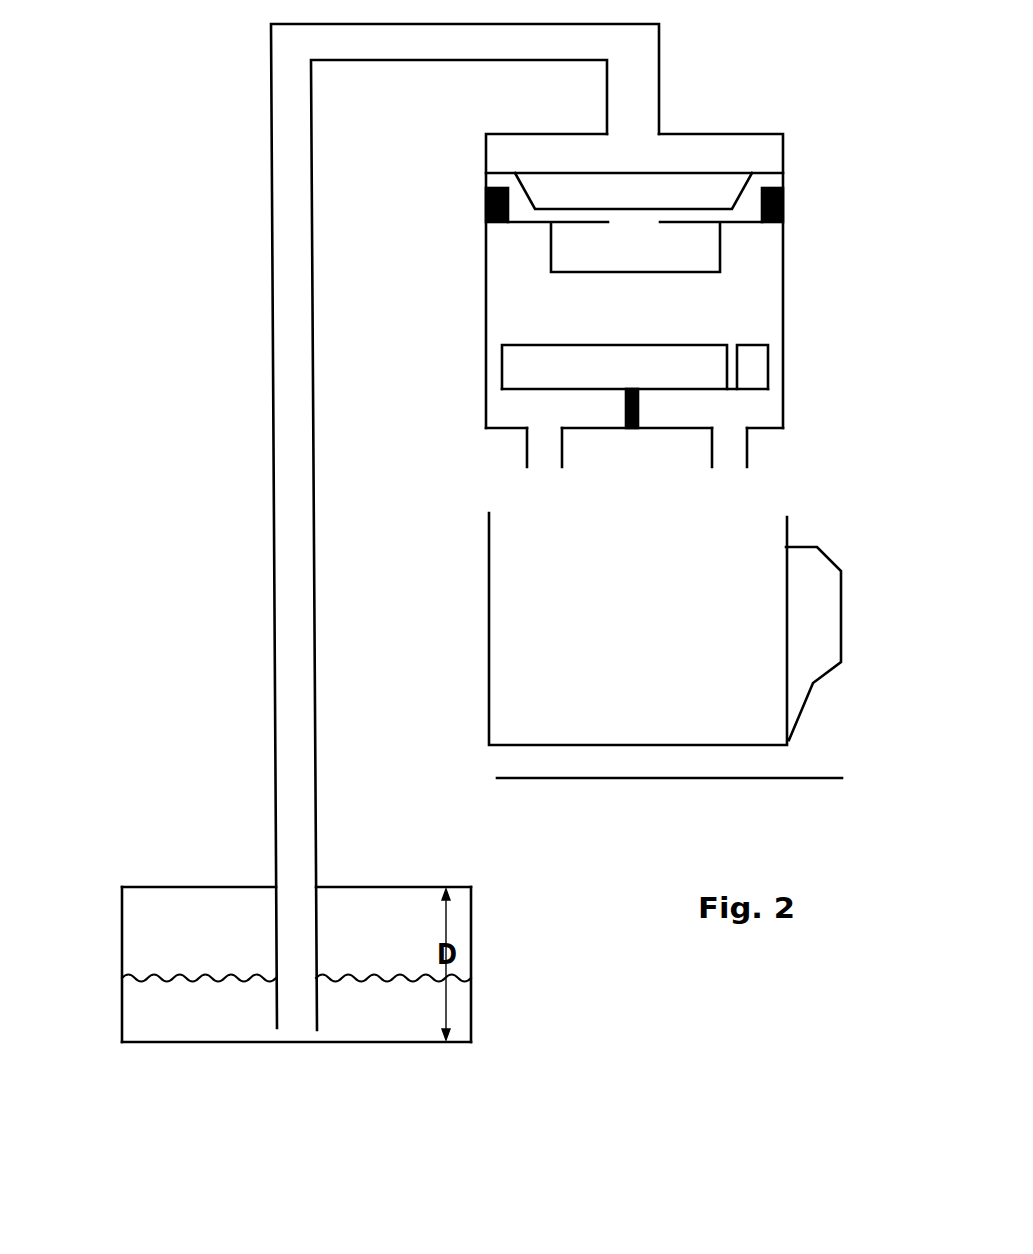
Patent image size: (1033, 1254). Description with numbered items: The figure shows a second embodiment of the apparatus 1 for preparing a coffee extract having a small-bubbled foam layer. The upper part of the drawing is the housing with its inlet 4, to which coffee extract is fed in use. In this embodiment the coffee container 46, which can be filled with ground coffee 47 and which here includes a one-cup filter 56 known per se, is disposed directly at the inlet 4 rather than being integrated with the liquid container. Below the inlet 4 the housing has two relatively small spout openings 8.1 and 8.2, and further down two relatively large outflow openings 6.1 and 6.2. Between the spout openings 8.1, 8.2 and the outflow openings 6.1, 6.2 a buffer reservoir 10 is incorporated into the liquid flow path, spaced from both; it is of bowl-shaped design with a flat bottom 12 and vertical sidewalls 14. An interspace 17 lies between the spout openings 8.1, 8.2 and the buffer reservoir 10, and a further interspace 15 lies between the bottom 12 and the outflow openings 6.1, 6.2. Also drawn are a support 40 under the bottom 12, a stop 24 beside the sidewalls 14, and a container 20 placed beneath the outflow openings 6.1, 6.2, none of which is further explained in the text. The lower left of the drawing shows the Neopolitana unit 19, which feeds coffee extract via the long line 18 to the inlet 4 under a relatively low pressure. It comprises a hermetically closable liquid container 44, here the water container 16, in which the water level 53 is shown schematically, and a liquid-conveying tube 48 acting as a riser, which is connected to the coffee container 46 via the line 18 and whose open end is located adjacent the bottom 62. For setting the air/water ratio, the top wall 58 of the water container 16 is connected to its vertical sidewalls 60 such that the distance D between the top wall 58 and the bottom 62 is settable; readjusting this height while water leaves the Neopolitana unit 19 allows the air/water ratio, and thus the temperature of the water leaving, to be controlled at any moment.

The apparatus 1 is at (404, 365).
The inlet 4 is at (568, 243).
The outflow opening 6.1 is at (538, 450).
The outflow opening 6.2 is at (735, 446).
The spout opening 8.1 is at (587, 273).
The spout opening 8.2 is at (683, 273).
The buffer reservoir 10 is at (513, 380).
The flat bottom 12 is at (563, 390).
The vertical sidewalls 14 is at (502, 373).
The interspace 15 is at (562, 424).
The water container 16 is at (471, 922).
The interspace 17 is at (646, 323).
The line 18 is at (314, 595).
The Neopolitana unit 19 is at (523, 1021).
The container 20 is at (841, 620).
The stop 24 is at (730, 352).
The support 40 is at (638, 415).
The liquid container 44 is at (122, 967).
The coffee container 46 is at (762, 155).
The ground coffee 47 is at (672, 197).
The liquid-conveying tube 48 is at (318, 967).
The water level 53 is at (148, 980).
The one-cup filter 56 is at (717, 195).
The top wall 58 is at (217, 888).
The vertical sidewalls 60 is at (122, 902).
The bottom 62 is at (175, 1042).